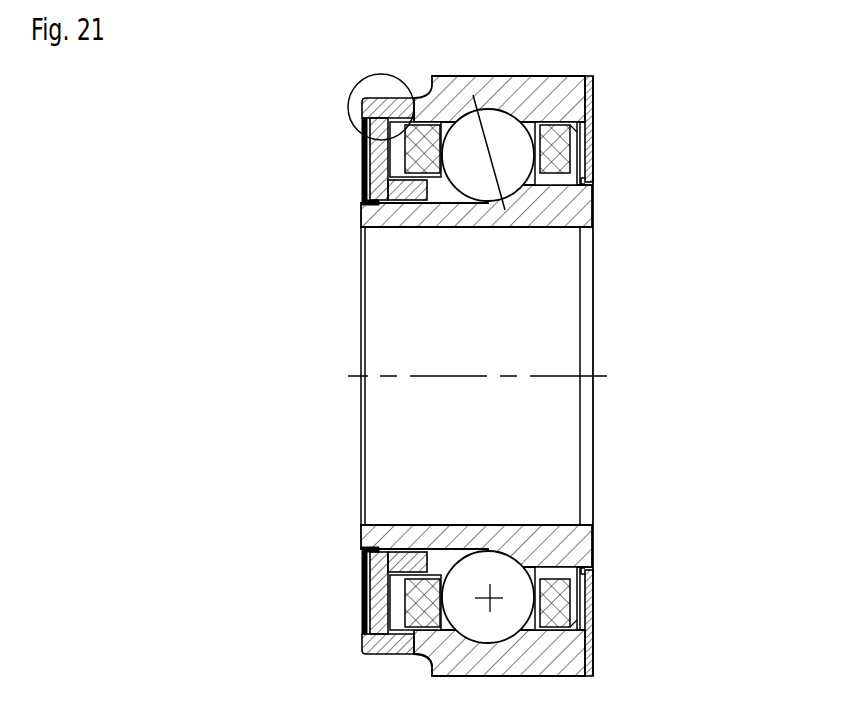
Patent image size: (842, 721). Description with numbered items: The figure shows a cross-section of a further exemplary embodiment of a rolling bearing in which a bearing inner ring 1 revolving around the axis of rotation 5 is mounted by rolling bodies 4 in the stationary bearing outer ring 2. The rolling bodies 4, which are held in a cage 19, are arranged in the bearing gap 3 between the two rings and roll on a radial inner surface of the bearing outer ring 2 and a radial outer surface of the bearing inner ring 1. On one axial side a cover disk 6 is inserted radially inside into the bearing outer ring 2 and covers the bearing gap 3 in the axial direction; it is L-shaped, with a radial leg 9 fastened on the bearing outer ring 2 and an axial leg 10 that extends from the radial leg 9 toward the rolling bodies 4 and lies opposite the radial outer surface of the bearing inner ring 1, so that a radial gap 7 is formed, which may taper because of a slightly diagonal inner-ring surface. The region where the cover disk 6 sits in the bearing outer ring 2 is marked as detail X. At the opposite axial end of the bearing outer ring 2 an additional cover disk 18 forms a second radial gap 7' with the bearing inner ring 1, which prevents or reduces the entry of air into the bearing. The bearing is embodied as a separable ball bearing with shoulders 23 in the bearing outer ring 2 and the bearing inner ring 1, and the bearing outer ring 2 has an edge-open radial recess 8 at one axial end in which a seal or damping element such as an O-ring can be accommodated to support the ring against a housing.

The bearing inner ring 1 is at (575, 545).
The bearing outer ring 2 is at (577, 93).
The bearing gap 3 is at (442, 570).
The rolling bodies 4 is at (483, 190).
The axis of rotation 5 is at (583, 376).
The cover disk 6 is at (375, 160).
The radial gap 7 is at (286, 376).
The second radial gap 7' is at (681, 376).
The radial recess 8 is at (412, 656).
The radial leg 9 is at (366, 142).
The axial leg 10 is at (398, 212).
The additional cover disk 18 is at (593, 115).
The cage 19 is at (557, 600).
The shoulder 23 is at (452, 113).
The detail X is at (373, 82).